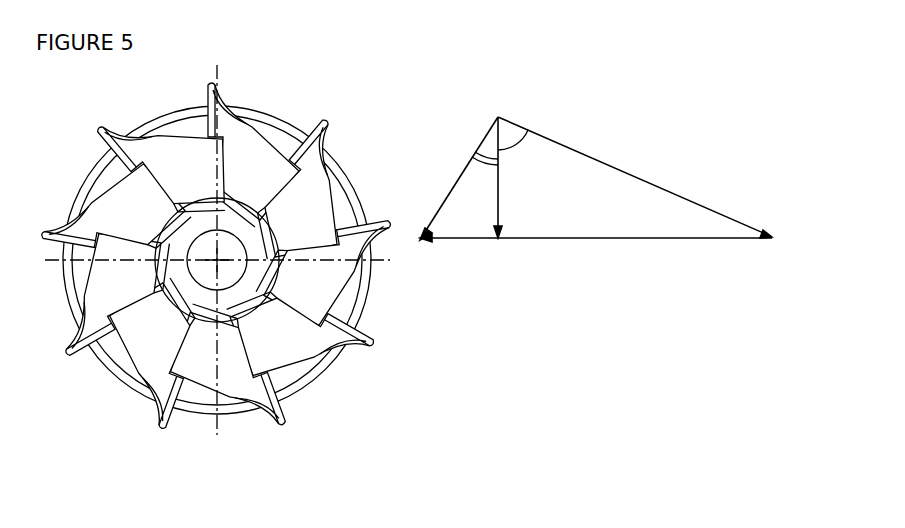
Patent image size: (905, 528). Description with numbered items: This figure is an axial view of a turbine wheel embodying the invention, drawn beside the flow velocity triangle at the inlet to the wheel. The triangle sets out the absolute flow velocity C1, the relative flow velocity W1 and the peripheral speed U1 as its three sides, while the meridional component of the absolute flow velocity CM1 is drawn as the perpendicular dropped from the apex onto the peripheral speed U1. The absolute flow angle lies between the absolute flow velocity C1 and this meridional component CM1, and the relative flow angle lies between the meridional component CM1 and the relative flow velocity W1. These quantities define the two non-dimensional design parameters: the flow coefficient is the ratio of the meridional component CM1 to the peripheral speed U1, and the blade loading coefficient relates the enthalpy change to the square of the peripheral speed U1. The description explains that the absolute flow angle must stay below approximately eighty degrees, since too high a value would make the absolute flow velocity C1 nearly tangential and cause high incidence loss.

The absolute flow velocity C1 is at (465, 167).
The relative flow velocity W1 is at (633, 175).
The peripheral speed U1 is at (641, 238).
The meridional component of the absolute flow velocity CM1 is at (502, 203).